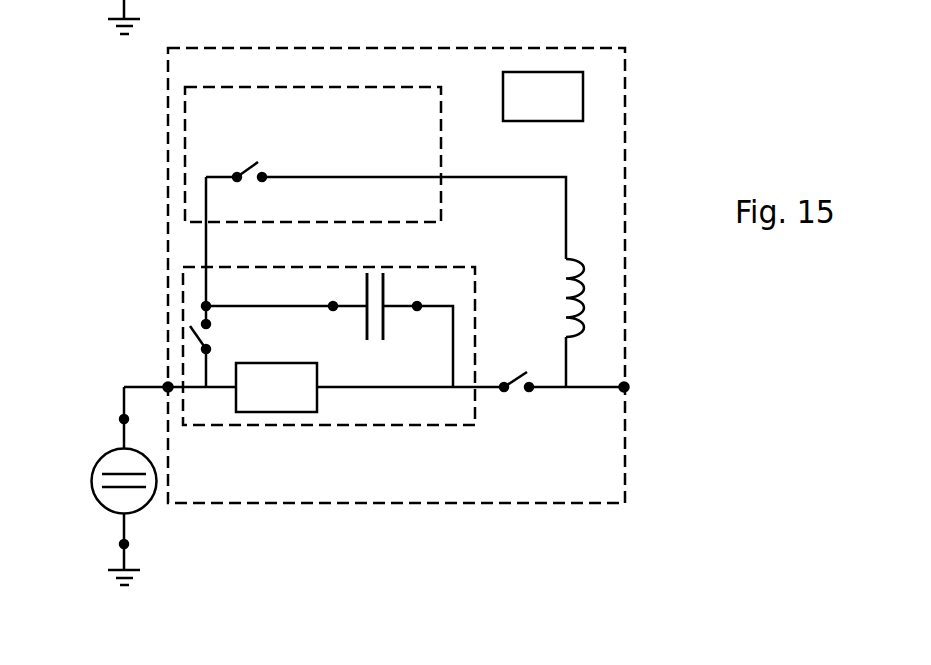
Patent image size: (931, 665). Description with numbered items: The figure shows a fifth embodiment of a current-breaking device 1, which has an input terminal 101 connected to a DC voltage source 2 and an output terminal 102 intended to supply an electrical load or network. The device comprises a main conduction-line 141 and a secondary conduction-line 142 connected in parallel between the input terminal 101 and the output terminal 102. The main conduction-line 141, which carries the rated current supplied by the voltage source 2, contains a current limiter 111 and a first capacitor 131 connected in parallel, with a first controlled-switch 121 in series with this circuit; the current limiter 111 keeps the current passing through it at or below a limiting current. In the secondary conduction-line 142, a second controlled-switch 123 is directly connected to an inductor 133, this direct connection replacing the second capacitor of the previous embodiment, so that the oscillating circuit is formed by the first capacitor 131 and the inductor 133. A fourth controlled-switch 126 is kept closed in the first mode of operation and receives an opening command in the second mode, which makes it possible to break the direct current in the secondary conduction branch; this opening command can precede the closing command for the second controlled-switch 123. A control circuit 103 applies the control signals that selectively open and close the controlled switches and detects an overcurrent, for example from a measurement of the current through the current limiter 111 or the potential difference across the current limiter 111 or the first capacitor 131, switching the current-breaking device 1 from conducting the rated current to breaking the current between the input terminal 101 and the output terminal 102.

The current-breaking device 1 is at (168, 277).
The DC voltage source 2 is at (91, 481).
The input terminal 101 is at (167, 386).
The output terminal 102 is at (620, 400).
The control circuit 103 is at (540, 72).
The current limiter 111 is at (277, 412).
The first controlled-switch 121 is at (523, 400).
The second controlled-switch 123 is at (250, 165).
The fourth controlled-switch 126 is at (187, 330).
The first capacitor 131 is at (360, 297).
The inductor 133 is at (583, 280).
The main conduction-line 141 is at (476, 346).
The secondary conduction-line 142 is at (185, 156).